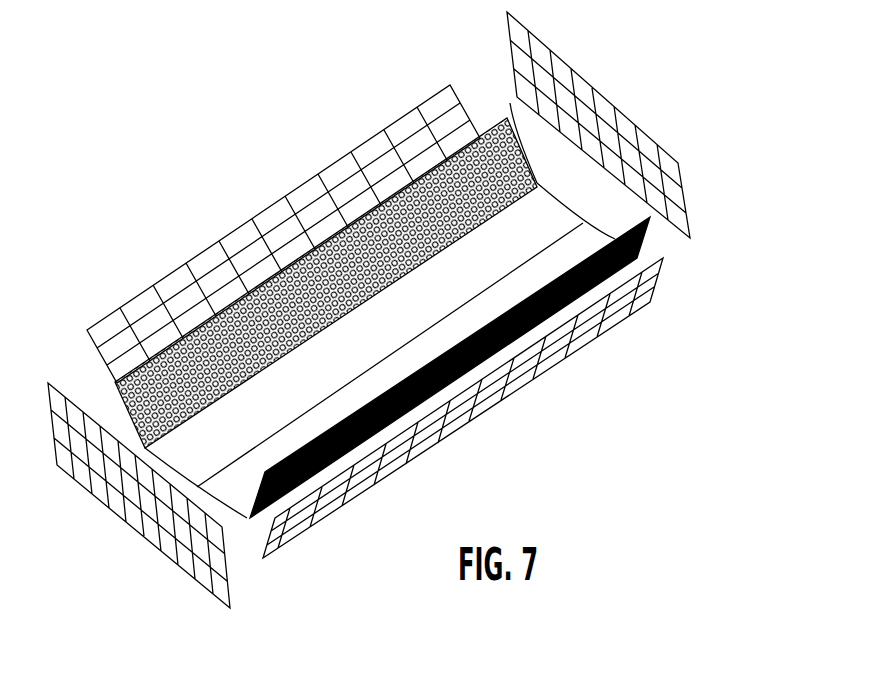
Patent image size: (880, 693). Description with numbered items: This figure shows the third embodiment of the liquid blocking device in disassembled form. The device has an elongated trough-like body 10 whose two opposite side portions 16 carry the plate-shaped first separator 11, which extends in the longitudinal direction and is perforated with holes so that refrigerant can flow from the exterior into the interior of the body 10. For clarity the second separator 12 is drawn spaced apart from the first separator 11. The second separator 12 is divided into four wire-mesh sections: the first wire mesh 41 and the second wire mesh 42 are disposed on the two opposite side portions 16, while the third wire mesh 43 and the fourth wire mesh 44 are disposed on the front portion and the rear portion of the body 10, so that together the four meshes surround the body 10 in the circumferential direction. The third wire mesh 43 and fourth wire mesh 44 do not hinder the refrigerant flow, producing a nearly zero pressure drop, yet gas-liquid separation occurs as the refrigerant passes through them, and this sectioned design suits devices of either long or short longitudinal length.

The body 10 is at (390, 345).
The first separator 11 is at (510, 103).
The second separator 12 is at (375, 338).
The side portions 16 is at (370, 208).
The first wire mesh 41 is at (253, 217).
The second wire mesh 42 is at (403, 467).
The third wire mesh 43 is at (118, 516).
The fourth wire mesh 44 is at (633, 124).